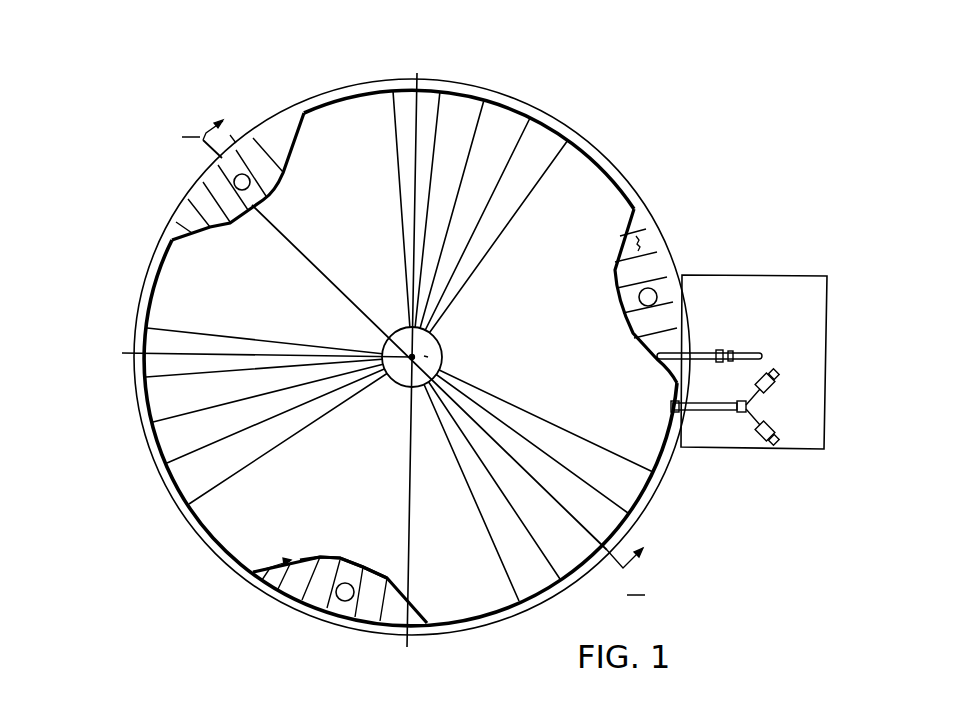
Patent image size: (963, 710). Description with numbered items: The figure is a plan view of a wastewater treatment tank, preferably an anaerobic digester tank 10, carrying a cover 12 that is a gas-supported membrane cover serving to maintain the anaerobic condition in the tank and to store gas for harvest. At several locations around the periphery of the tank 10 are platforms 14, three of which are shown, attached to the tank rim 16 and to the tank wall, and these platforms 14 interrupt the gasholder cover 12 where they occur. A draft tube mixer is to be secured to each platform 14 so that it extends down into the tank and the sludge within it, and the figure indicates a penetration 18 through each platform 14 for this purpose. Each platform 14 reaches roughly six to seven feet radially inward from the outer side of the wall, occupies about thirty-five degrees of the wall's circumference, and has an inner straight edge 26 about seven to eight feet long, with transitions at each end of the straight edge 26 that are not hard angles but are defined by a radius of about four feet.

The anaerobic digester tank 10 is at (575, 131).
The cover 12 is at (358, 135).
The platforms 14 is at (252, 157).
The tank rim 16 is at (137, 313).
The penetration 18 is at (234, 186).
The inner straight edge 26 is at (357, 566).